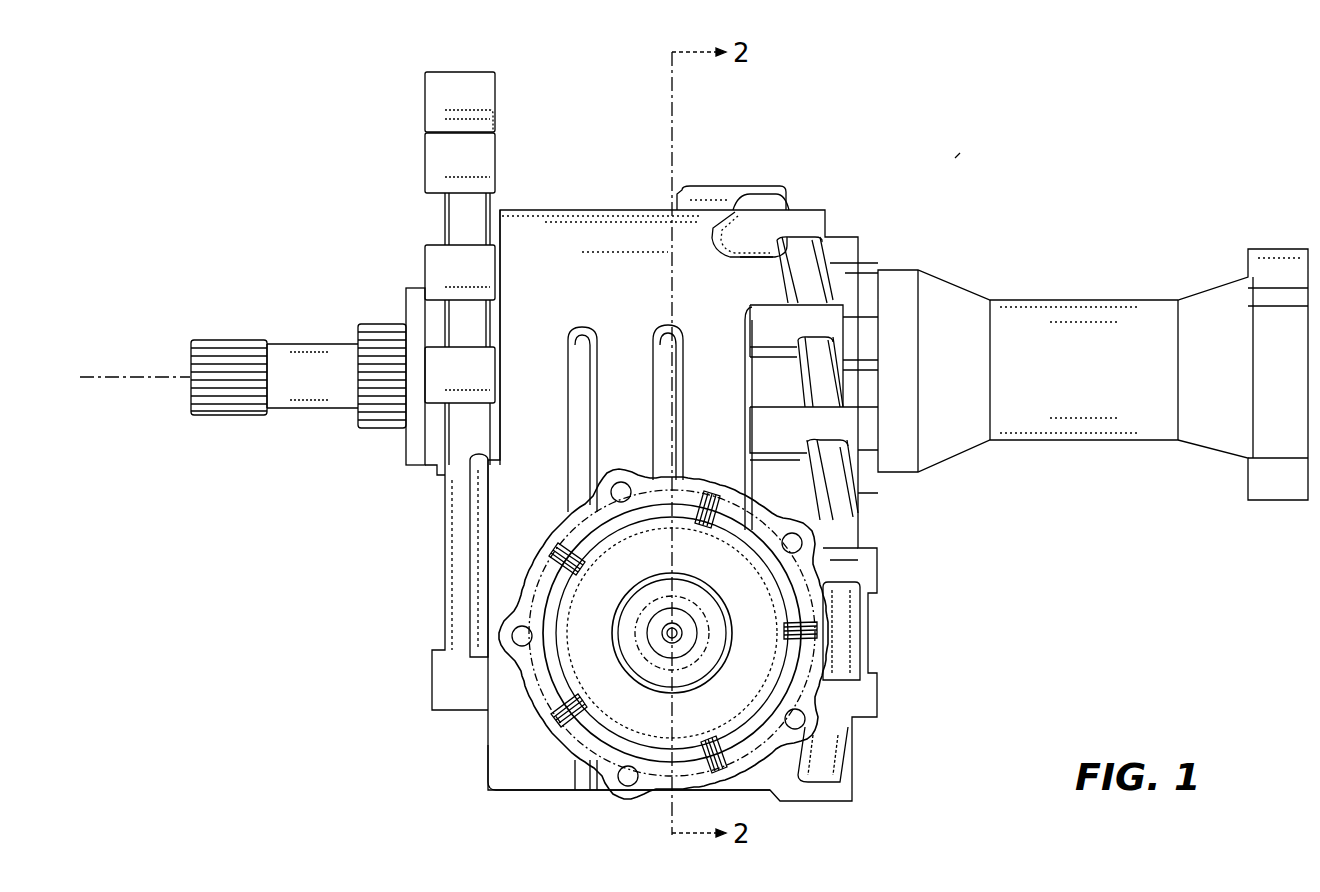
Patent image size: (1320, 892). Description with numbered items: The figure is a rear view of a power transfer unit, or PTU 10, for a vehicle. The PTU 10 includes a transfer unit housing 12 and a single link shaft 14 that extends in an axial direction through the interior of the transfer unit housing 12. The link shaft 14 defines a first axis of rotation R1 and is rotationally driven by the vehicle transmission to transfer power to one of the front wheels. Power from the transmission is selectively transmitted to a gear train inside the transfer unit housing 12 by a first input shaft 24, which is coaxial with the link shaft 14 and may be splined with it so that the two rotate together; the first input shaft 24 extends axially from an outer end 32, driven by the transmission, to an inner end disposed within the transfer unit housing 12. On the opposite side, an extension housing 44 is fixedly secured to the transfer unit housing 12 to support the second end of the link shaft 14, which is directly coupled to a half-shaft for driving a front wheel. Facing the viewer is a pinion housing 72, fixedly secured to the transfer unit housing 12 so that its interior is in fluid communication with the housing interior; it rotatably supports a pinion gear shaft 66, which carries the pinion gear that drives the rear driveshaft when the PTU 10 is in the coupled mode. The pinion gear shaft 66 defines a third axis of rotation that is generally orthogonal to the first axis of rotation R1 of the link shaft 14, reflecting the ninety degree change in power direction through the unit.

The PTU 10 is at (954, 158).
The transfer unit housing 12 is at (587, 240).
The link shaft 14 is at (226, 340).
The first input shaft 24 is at (390, 324).
The outer end 32 is at (384, 428).
The extension housing 44 is at (1050, 300).
The pinion gear shaft 66 is at (650, 675).
The pinion housing 72 is at (503, 748).
The first axis of rotation R1 is at (117, 381).